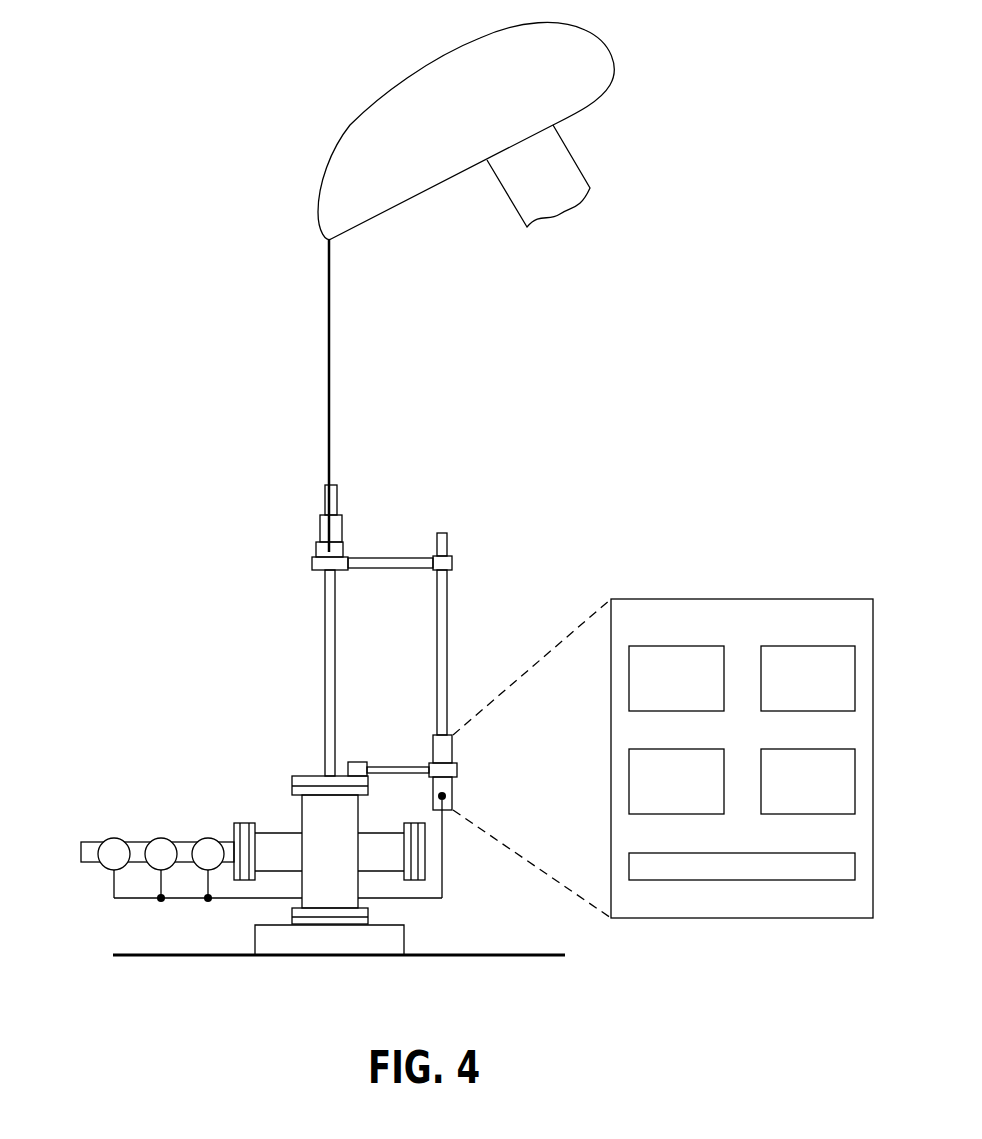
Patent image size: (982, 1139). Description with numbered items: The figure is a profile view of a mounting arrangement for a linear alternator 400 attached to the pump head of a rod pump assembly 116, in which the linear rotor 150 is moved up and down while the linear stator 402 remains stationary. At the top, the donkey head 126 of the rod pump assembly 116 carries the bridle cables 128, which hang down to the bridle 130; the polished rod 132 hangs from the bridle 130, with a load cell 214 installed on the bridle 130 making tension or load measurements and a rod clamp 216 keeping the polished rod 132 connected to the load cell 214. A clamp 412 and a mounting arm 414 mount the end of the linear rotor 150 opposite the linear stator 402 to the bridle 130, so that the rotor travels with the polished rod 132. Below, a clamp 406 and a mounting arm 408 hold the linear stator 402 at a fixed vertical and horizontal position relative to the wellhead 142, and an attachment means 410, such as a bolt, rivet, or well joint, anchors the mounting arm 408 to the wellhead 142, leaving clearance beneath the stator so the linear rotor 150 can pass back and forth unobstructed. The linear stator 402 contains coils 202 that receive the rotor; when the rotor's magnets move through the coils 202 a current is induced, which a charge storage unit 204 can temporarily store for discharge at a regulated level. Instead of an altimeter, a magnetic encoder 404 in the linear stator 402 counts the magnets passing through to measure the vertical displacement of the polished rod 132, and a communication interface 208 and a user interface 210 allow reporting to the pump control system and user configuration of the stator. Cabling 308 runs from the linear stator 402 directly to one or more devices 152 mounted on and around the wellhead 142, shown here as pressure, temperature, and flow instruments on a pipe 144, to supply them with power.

The rod pump assembly 116 is at (150, 143).
The donkey head 126 is at (405, 82).
The bridle cables 128 is at (329, 313).
The bridle 130 is at (312, 562).
The polished rod 132 is at (325, 634).
The wellhead 142 is at (243, 797).
The pipe 144 is at (90, 862).
The linear rotor 150 is at (447, 660).
The devices 152 is at (112, 838).
The coils 202 is at (742, 881).
The charge storage unit 204 is at (705, 815).
The communication interface 208 is at (705, 712).
The user interface 210 is at (836, 712).
The load cell 214 is at (345, 550).
The rod clamp 216 is at (320, 528).
The cabling 308 is at (243, 900).
The linear alternator 400 is at (538, 512).
The linear stator 402 is at (453, 747).
The magnetic encoder 404 is at (836, 815).
The clamp 406 is at (457, 770).
The mounting arm 408 is at (385, 774).
The attachment means 410 is at (362, 762).
The clamp 412 is at (452, 562).
The mounting arm 414 is at (397, 570).